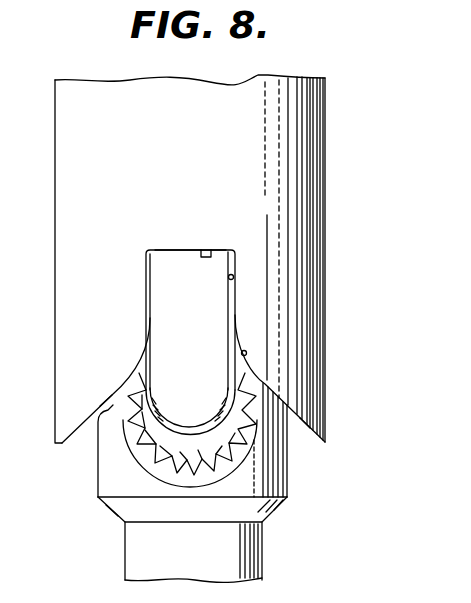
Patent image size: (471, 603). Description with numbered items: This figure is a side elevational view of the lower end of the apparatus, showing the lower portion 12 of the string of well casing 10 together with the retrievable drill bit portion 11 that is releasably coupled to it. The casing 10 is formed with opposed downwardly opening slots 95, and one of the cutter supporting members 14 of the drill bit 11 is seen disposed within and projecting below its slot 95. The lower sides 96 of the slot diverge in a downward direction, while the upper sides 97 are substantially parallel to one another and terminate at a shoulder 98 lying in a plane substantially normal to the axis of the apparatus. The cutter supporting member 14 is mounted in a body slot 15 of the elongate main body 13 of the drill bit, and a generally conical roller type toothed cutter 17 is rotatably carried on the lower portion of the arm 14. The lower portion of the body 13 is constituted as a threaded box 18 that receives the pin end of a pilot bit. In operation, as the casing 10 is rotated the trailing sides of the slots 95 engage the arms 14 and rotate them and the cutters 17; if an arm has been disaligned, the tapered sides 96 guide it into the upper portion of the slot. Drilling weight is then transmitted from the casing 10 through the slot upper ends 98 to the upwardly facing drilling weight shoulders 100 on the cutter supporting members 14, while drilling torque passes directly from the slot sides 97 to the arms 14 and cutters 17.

The string of well casing 10 is at (333, 137).
The lower portion of the casing 12 is at (326, 172).
The cutter supporting member 14 is at (164, 352).
The drilling weight shoulder 100 is at (171, 250).
The shoulder 98 is at (210, 250).
The upper sides of slot 97 is at (234, 278).
The downwardly opening slot 95 is at (247, 353).
The lower sides of slot 96 is at (80, 428).
The toothed cutter 17 is at (238, 439).
The body slot 15 is at (136, 465).
The main body 13 is at (287, 494).
The drill bit portion 11 is at (106, 517).
The threaded box 18 is at (262, 572).